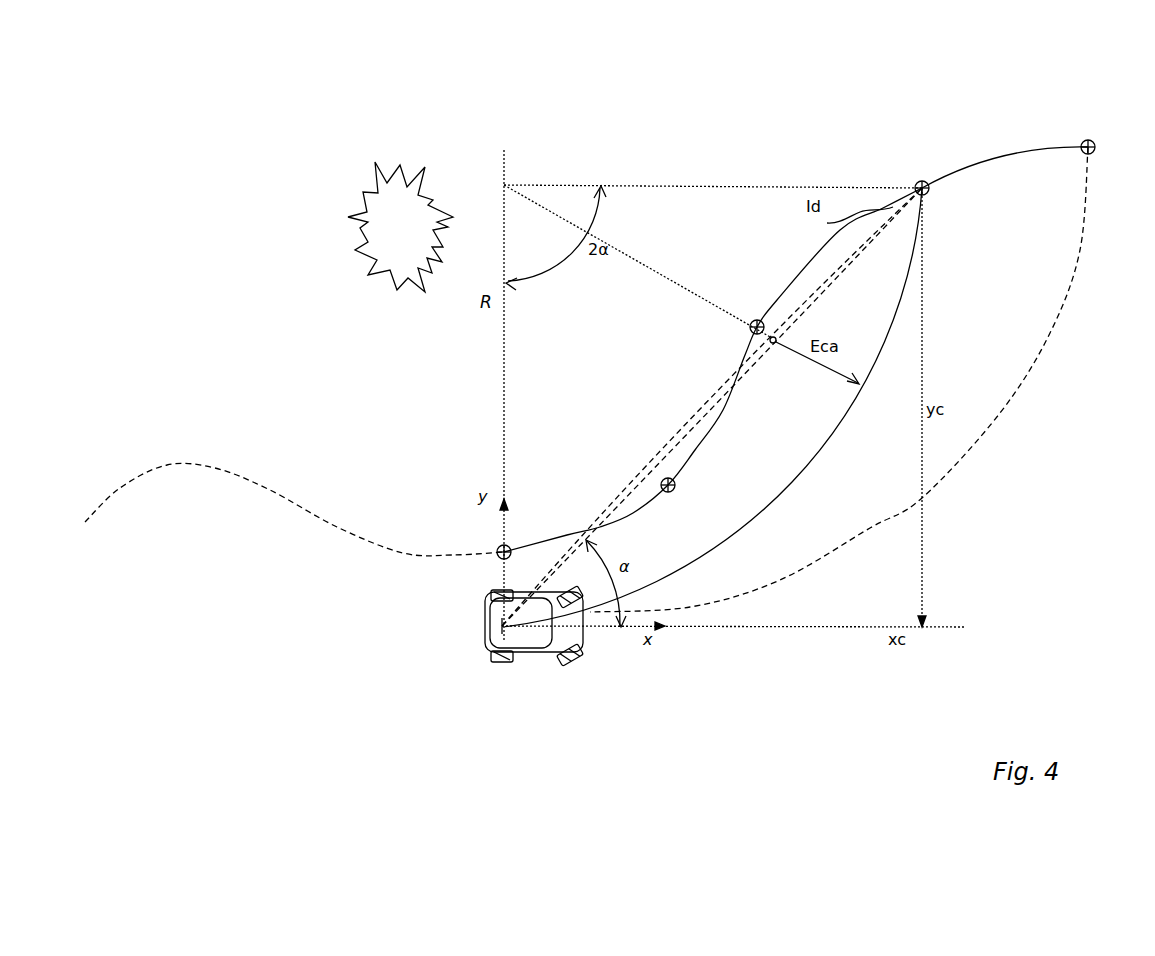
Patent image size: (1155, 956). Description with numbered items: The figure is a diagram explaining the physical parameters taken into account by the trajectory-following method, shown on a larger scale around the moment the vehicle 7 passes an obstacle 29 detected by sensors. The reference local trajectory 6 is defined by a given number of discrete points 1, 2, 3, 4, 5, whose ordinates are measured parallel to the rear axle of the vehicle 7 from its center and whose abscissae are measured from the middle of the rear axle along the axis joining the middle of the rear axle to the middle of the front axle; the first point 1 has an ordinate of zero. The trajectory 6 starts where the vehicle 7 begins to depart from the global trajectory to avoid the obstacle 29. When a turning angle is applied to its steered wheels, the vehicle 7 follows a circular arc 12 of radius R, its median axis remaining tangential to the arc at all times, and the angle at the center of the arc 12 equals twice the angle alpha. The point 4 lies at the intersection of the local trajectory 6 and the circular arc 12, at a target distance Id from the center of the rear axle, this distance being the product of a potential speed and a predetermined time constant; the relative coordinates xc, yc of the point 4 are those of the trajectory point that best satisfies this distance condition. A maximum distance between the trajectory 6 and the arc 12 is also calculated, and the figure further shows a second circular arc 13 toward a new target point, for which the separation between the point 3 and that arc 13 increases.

The discrete point 1 is at (497, 548).
The discrete point 2 is at (670, 493).
The discrete point 3 is at (757, 320).
The point of intersection 4 is at (917, 183).
The discrete point 5 is at (1095, 150).
The reference local trajectory 6 is at (1000, 158).
The vehicle 7 is at (567, 666).
The circular arc 12 is at (812, 455).
The circular arc 13 is at (958, 452).
The obstacle 29 is at (415, 182).